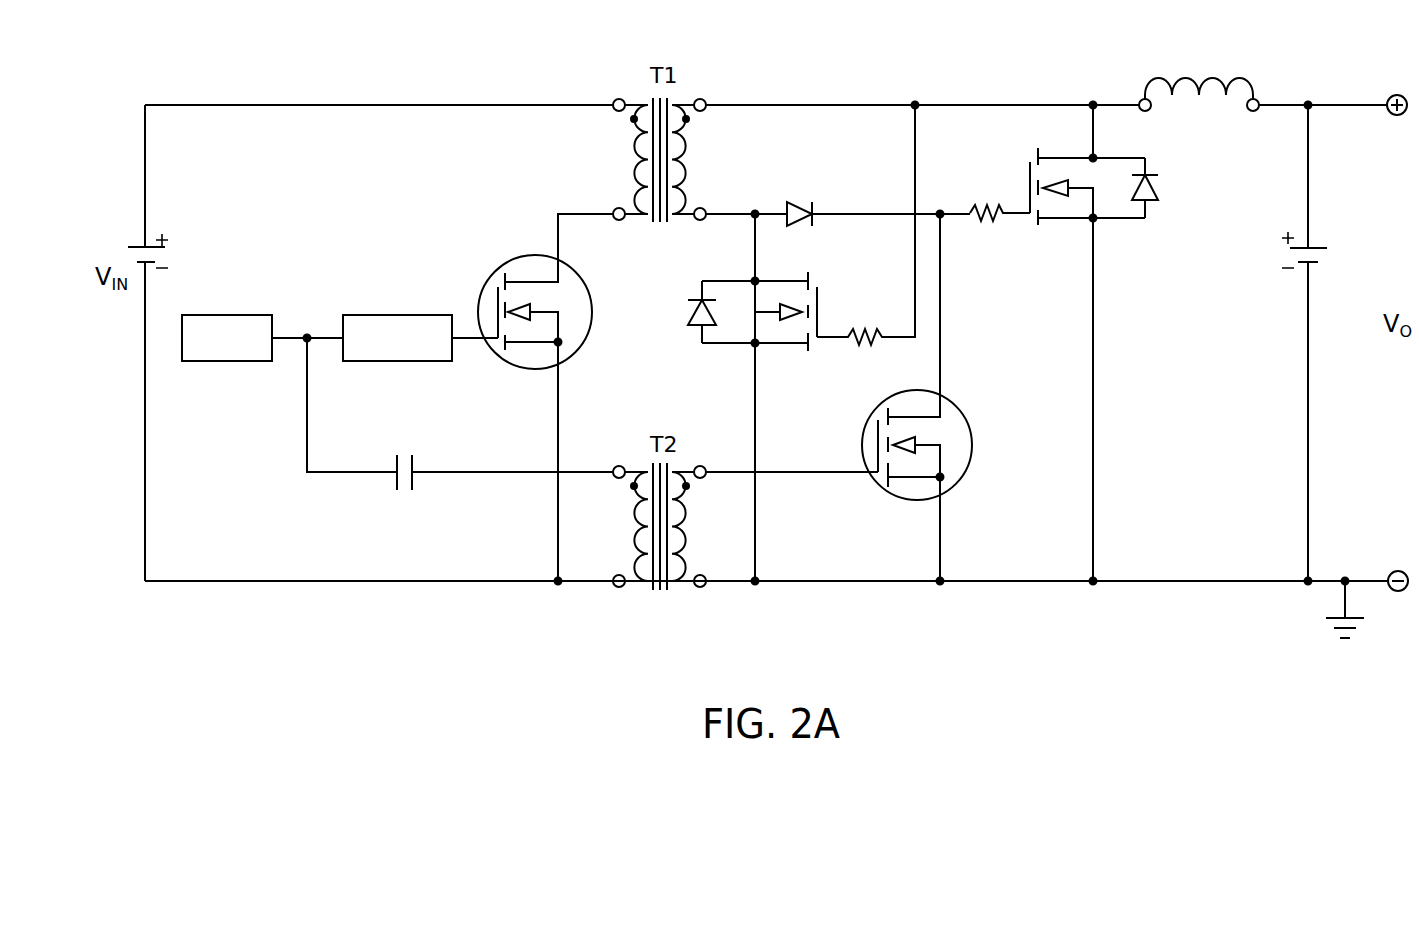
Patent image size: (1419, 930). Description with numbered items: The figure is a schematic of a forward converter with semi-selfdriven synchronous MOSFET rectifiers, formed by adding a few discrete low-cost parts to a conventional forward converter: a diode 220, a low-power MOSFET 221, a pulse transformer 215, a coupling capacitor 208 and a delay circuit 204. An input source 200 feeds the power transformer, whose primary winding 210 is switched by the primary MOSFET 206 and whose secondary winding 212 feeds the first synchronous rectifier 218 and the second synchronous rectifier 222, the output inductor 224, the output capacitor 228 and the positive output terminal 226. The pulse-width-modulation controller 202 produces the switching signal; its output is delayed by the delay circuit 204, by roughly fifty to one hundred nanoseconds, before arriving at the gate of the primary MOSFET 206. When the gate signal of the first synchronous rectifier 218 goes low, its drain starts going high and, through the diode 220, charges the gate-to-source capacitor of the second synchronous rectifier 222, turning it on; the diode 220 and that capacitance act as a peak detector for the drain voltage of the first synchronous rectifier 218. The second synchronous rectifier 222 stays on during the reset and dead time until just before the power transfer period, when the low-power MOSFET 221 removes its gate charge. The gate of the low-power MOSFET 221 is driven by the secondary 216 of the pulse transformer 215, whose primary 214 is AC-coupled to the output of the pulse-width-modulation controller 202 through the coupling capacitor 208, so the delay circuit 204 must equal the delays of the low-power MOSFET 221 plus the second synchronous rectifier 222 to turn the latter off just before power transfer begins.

The input voltage source 200 is at (178, 247).
The PWM 202 is at (243, 360).
The delay circuit 204 is at (397, 359).
The Q1 206 is at (513, 253).
The capacitor C1 208 is at (396, 504).
The primary winding of transformer T1 210 is at (614, 91).
The secondary winding of transformer T1 212 is at (705, 91).
The primary 214 is at (613, 600).
The pulse transformer T2 215 is at (660, 598).
The secondary 216 is at (706, 600).
The Q2 218 is at (697, 356).
The diode D1 220 is at (776, 203).
The Q4 221 is at (878, 506).
The synchronous MOSFET rectifier Q3 222 is at (1125, 233).
The output inductor LO 224 is at (1134, 90).
The positive output terminal 226 is at (1389, 88).
The output capacitor CO 228 is at (1320, 236).